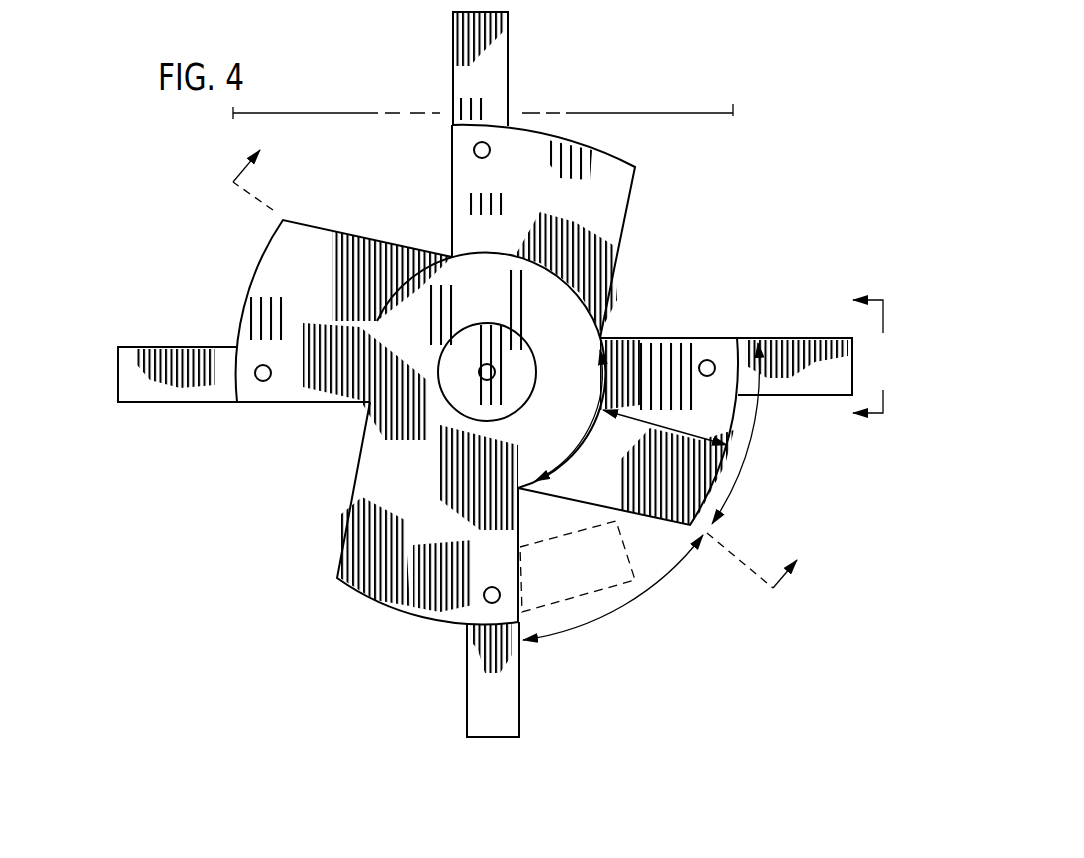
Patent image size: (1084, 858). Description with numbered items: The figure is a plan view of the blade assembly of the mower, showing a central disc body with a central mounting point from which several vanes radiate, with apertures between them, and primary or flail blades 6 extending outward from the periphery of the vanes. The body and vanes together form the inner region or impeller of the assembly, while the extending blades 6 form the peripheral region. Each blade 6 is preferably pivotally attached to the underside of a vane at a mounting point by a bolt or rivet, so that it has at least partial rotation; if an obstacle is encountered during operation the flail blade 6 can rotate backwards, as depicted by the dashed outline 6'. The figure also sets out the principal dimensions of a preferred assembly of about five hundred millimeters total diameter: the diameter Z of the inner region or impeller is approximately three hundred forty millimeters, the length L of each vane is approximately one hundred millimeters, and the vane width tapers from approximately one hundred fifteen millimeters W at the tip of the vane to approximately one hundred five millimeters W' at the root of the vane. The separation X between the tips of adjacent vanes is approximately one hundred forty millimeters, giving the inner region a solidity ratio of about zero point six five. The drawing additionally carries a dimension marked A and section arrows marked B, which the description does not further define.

The flail blade 6 is at (485, 374).
The dashed outline of rotated blade 6' is at (577, 566).
The blade width dimension A is at (872, 356).
The section line B- B is at (500, 390).
The length of the vanes L is at (665, 421).
The width of the vane at the tip W is at (749, 433).
The width of the vane at the root W' is at (573, 417).
The separation between the tips of the vanes X is at (613, 587).
The diameter of the inner region or impeller Z is at (483, 88).